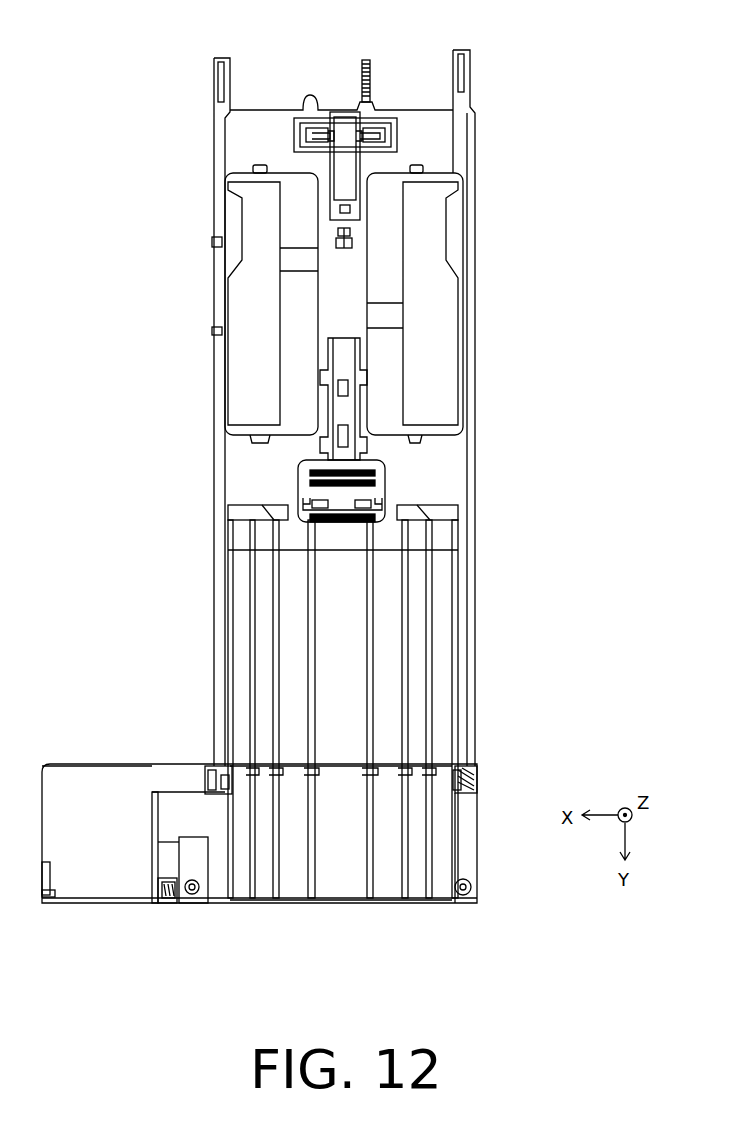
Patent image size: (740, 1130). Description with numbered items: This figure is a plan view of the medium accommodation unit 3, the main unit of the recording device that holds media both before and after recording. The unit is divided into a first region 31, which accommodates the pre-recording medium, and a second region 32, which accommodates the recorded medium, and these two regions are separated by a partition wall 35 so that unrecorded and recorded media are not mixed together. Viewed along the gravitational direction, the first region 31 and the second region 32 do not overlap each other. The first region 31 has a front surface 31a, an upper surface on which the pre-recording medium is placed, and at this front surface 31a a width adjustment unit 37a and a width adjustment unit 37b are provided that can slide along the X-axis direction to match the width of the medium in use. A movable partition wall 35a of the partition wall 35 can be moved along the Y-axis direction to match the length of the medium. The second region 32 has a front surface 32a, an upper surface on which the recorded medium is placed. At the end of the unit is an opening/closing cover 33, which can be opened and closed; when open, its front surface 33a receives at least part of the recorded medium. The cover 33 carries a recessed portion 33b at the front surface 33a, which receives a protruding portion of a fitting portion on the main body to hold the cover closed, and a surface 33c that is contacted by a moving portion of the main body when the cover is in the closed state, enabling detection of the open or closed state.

The medium accommodation unit 3 is at (572, 62).
The first region 31 is at (430, 137).
The front surface 31a is at (342, 268).
The second region 32 is at (445, 643).
The front surface 32a is at (385, 593).
The opening/closing cover 33 is at (477, 850).
The front surface 33a is at (341, 865).
The recessed portion 33b is at (172, 903).
The surface 33c is at (106, 858).
The partition wall 35 is at (275, 522).
The movable partition wall 35a is at (330, 505).
The width adjustment unit 37a is at (433, 224).
The width adjustment unit 37b is at (253, 223).